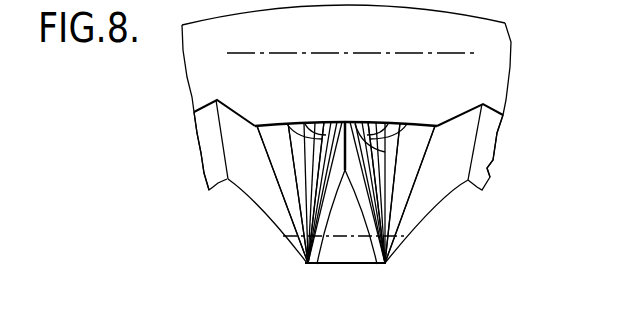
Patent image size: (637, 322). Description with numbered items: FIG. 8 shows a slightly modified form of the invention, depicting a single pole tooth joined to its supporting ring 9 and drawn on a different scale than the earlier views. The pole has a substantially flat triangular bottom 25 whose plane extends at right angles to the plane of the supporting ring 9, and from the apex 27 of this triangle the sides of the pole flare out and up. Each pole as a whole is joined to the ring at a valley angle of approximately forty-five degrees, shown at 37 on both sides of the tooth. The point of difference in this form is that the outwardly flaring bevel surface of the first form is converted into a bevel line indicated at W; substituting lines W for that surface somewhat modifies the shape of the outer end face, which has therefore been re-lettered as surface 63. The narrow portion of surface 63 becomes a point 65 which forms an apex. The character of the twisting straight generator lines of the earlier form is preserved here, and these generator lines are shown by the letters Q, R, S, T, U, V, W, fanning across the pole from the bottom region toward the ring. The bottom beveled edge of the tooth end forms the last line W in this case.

The supporting ring 9 is at (247, 82).
The triangular bottom 25 is at (275, 124).
The apex of triangle 27 is at (345, 121).
The valley angle 37 is at (215, 128).
The surface 63 is at (356, 231).
The point 65 is at (346, 173).
The generator line Q is at (278, 179).
The generator line R is at (293, 157).
The generator line S is at (303, 143).
The generator line T is at (300, 122).
The generator line U is at (315, 122).
The generator line V is at (328, 122).
The bevel line W is at (357, 122).